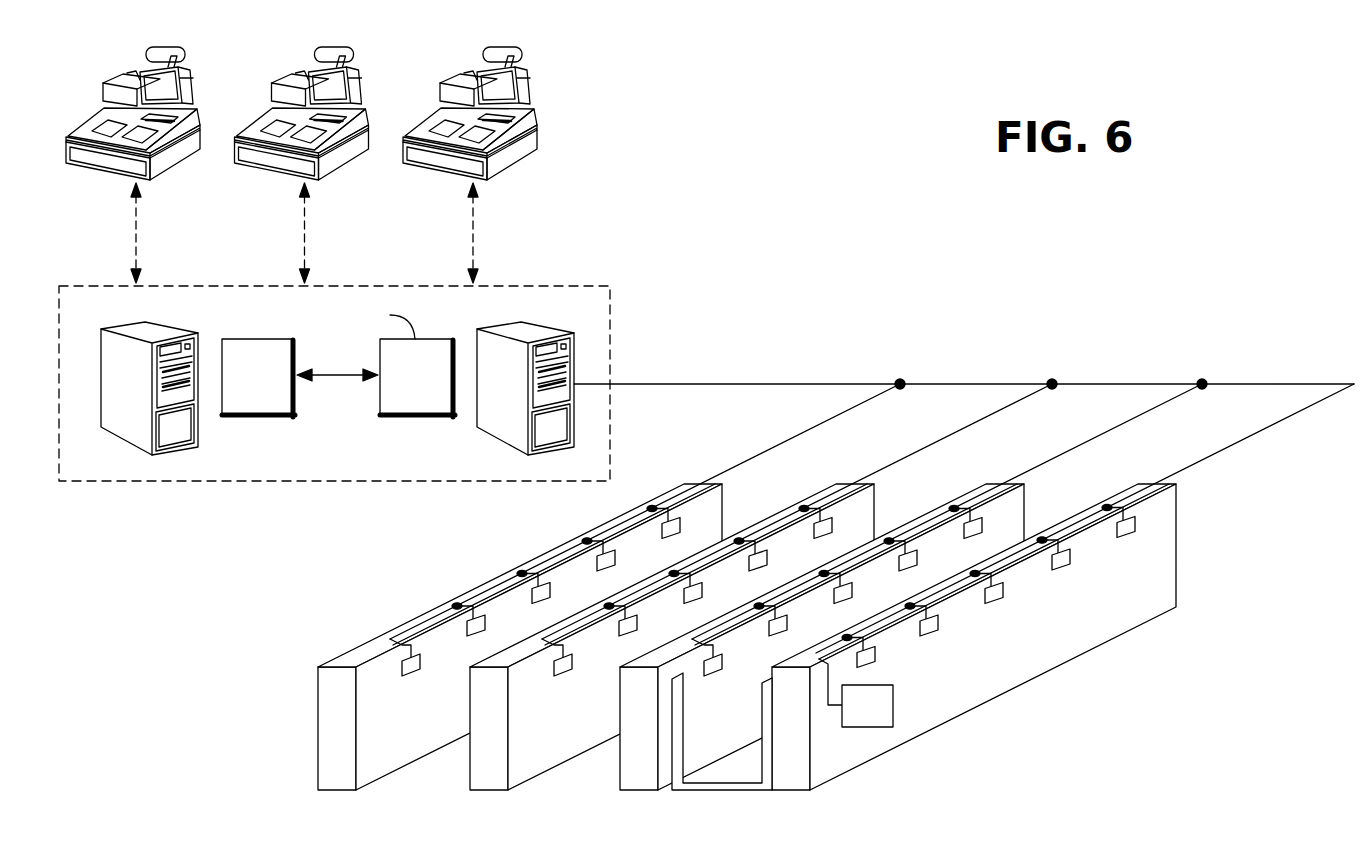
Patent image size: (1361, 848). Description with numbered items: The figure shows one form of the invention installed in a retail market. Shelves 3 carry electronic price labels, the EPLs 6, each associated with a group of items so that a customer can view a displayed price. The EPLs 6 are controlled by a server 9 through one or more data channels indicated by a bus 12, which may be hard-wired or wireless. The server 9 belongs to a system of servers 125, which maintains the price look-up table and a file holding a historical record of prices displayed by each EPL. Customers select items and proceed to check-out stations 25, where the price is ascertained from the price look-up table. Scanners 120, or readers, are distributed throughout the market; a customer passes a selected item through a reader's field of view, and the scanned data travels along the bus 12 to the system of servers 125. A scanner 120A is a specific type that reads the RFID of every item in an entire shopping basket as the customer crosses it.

The check-out station 25 is at (630, 94).
The system of servers 125 is at (572, 284).
The server 9 is at (498, 441).
The bus 12 is at (1270, 384).
The shelves 3 is at (328, 713).
The EPLs 6 is at (562, 676).
The scanners 120 is at (877, 728).
The scanner 120A is at (712, 790).